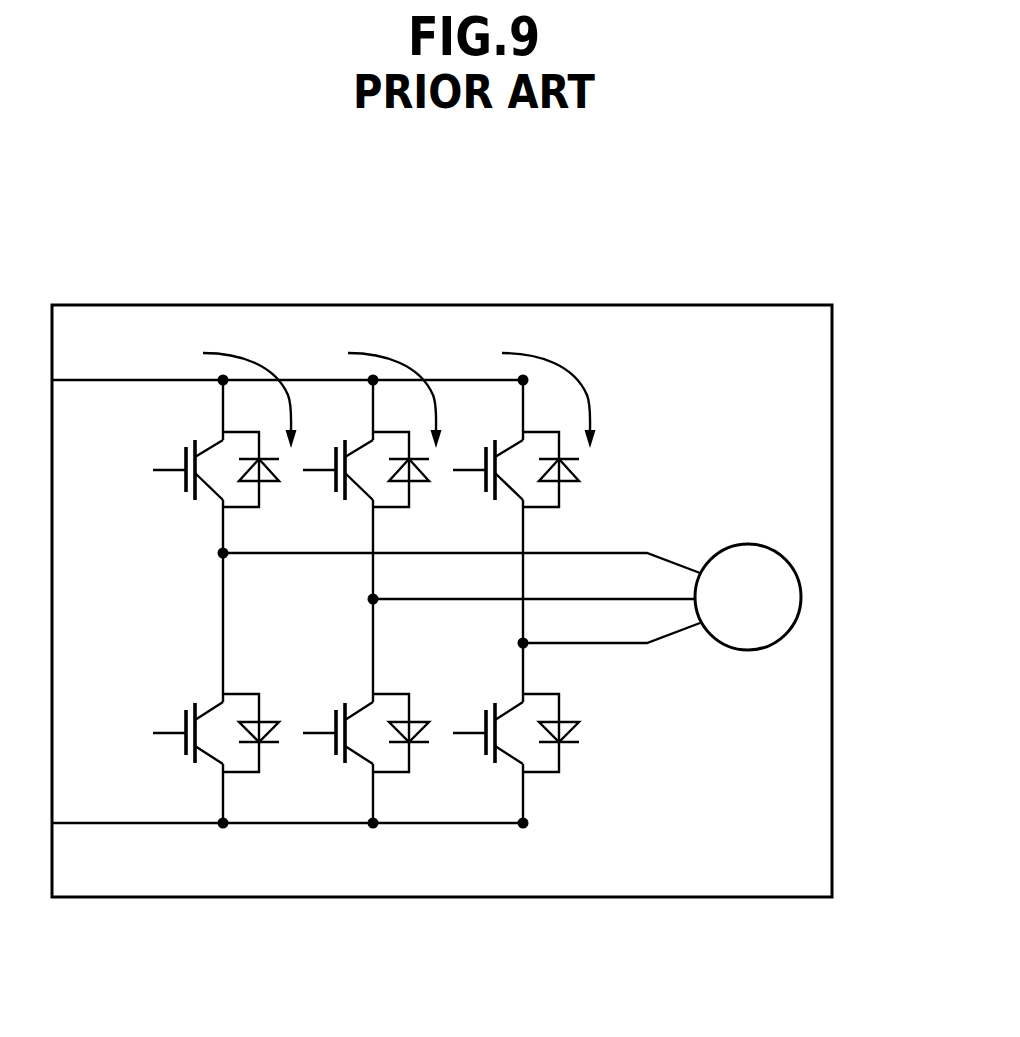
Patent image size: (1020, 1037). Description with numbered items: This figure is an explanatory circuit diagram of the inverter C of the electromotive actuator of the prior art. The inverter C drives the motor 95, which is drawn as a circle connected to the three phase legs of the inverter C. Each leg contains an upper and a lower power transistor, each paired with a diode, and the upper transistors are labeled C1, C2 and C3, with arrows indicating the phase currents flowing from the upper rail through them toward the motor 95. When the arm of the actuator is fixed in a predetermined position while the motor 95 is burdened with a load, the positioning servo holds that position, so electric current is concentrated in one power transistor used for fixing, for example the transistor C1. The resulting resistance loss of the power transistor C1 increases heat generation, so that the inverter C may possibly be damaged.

The inverter C is at (452, 342).
The power transistor C1 is at (207, 447).
The second phase switching arm C2 is at (357, 447).
The third phase switching arm C3 is at (507, 447).
The motor 95 is at (801, 597).